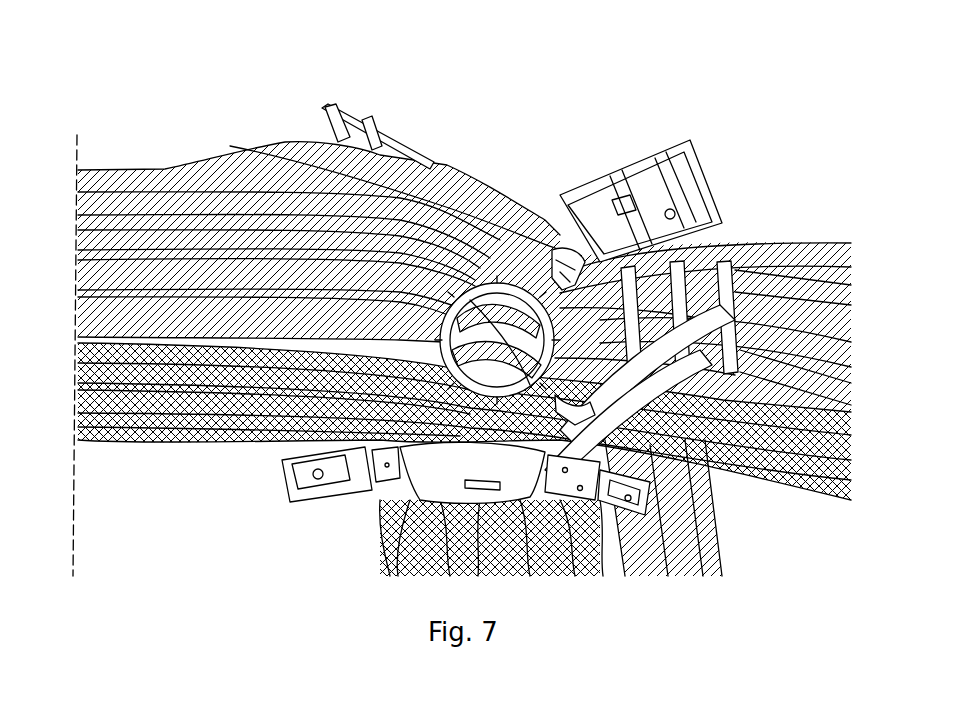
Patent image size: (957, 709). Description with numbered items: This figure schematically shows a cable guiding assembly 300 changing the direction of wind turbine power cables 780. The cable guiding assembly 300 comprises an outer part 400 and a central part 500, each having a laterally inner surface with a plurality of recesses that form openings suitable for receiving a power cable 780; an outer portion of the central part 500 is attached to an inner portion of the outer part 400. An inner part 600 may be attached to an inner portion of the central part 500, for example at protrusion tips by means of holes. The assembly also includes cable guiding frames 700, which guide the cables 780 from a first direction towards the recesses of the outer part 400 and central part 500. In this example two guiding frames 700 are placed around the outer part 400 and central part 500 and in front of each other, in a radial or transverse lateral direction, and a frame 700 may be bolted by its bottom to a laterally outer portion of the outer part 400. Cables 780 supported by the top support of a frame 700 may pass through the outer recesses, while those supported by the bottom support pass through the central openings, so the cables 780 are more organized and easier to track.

The cable guiding assembly 300 is at (464, 322).
The outer part 400 is at (392, 478).
The central part 500 is at (560, 250).
The inner part 600 is at (505, 262).
The cable guiding frame 700 is at (322, 108).
The wind turbine power cable 780 is at (790, 242).